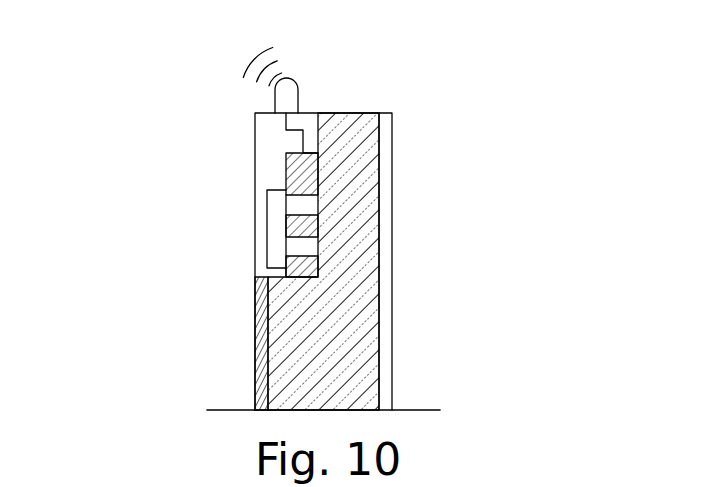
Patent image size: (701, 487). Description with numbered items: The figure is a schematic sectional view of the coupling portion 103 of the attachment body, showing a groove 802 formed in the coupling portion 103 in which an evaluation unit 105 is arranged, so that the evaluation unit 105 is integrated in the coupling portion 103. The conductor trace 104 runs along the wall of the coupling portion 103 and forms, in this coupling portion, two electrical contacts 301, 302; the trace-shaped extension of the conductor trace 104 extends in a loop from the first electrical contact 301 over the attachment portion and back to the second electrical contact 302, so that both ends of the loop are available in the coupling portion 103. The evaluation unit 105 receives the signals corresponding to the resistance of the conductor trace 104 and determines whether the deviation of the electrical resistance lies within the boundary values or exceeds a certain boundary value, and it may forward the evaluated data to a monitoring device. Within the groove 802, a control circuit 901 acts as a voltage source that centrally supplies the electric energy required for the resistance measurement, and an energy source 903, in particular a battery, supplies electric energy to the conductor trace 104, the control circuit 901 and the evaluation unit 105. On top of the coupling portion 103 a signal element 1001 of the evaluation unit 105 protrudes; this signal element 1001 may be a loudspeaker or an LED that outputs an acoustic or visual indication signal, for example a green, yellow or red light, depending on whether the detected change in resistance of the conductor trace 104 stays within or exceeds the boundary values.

The signal element 1001 is at (289, 78).
The groove 802 is at (310, 113).
The evaluation unit 105 is at (307, 175).
The energy source 903 is at (307, 228).
The control circuit 901 is at (307, 268).
The first electrical contact 301 is at (178, 249).
The second electrical contact 302 is at (262, 269).
The conductor trace 104 is at (262, 350).
The coupling portion 103 is at (372, 333).